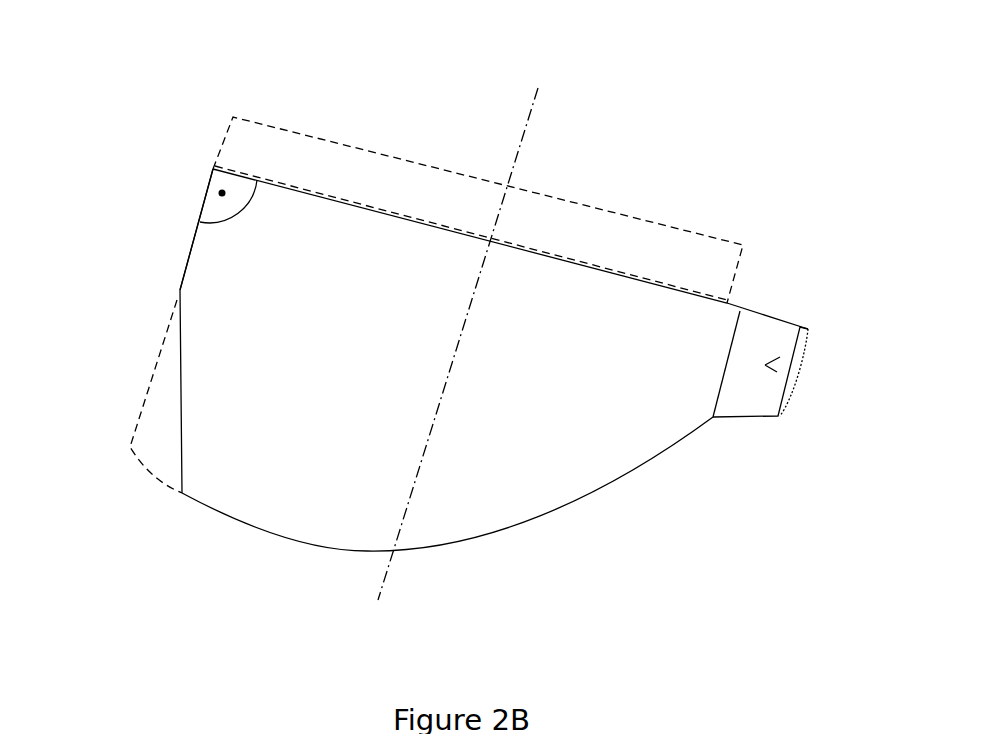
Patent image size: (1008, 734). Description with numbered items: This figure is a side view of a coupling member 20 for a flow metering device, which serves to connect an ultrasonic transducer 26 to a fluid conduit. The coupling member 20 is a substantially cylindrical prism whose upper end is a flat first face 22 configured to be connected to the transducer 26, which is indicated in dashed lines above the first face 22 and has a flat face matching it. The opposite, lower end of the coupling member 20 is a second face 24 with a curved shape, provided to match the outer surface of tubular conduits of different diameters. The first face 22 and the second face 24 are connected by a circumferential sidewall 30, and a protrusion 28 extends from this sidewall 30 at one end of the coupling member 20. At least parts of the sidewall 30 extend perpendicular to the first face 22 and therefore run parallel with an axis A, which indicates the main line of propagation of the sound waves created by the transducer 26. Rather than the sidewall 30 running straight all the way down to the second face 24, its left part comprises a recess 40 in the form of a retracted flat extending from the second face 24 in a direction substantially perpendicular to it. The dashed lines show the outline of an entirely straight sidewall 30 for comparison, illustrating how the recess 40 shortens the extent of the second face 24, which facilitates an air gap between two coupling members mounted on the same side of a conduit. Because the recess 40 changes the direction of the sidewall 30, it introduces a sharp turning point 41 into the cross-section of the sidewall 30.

The coupling member 20 is at (150, 50).
The first face 22 is at (623, 278).
The second face 24 is at (528, 515).
The ultrasonic transducer 26 is at (565, 222).
The protrusion 28 is at (765, 365).
The sidewall 30 is at (190, 245).
The recess 40 is at (182, 400).
The sharp turning point 41 is at (178, 289).
The axis A is at (525, 130).